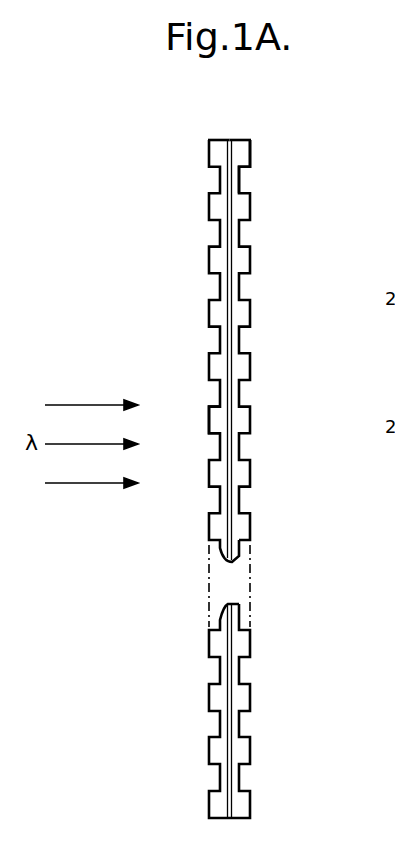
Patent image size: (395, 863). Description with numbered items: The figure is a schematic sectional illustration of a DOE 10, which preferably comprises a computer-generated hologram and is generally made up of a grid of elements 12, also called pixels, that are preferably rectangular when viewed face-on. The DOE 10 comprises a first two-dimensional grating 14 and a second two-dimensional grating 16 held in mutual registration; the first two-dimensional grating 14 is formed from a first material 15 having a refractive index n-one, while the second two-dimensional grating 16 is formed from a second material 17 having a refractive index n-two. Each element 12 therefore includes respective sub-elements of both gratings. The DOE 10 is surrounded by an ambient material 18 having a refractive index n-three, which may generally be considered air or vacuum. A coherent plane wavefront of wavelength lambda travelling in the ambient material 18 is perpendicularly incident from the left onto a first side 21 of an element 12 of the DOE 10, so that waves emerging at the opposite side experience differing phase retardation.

The DOE 10 is at (198, 142).
The element 12 is at (288, 140).
The first two-dimensional grating 14 is at (209, 262).
The first material 15 is at (222, 140).
The second two-dimensional grating 16 is at (250, 262).
The second material 17 is at (244, 140).
The ambient material 18 is at (290, 725).
The first side 21 is at (209, 424).